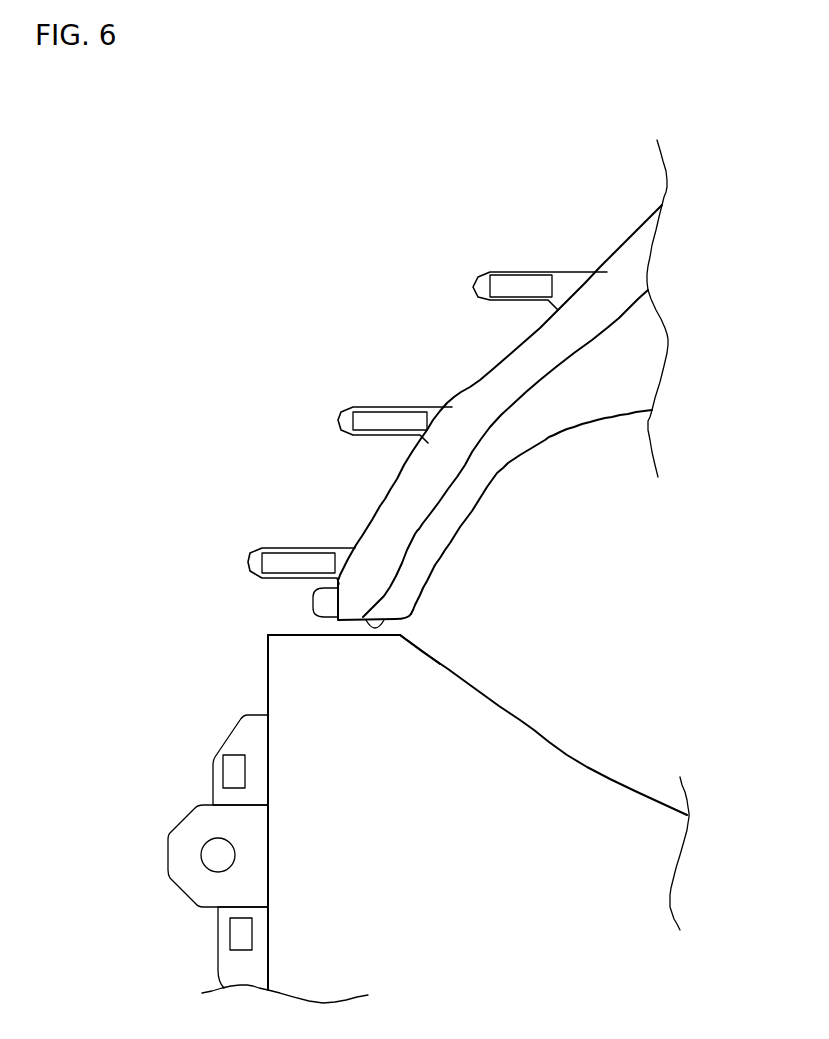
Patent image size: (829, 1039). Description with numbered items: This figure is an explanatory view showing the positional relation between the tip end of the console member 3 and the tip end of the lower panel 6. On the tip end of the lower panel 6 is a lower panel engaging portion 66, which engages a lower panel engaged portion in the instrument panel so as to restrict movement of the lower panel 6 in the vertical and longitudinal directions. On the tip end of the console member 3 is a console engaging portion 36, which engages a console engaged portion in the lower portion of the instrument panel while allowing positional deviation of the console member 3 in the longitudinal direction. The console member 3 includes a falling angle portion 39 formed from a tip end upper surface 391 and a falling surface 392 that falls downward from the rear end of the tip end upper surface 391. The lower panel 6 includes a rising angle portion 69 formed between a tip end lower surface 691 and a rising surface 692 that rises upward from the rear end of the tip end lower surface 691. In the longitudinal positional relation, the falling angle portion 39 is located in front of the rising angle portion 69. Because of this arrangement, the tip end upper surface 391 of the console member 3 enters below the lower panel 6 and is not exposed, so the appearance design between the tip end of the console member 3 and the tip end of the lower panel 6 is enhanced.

The console member 3 is at (413, 805).
The console engaging portion 36 is at (178, 858).
The falling angle portion 39 is at (402, 636).
The tip end upper surface 391 is at (292, 633).
The falling surface 392 is at (587, 767).
The lower panel 6 is at (474, 365).
The lower panel engaging portion 66 is at (502, 288).
The rising angle portion 69 is at (412, 620).
The tip end lower surface 691 is at (362, 617).
The rising surface 692 is at (498, 475).